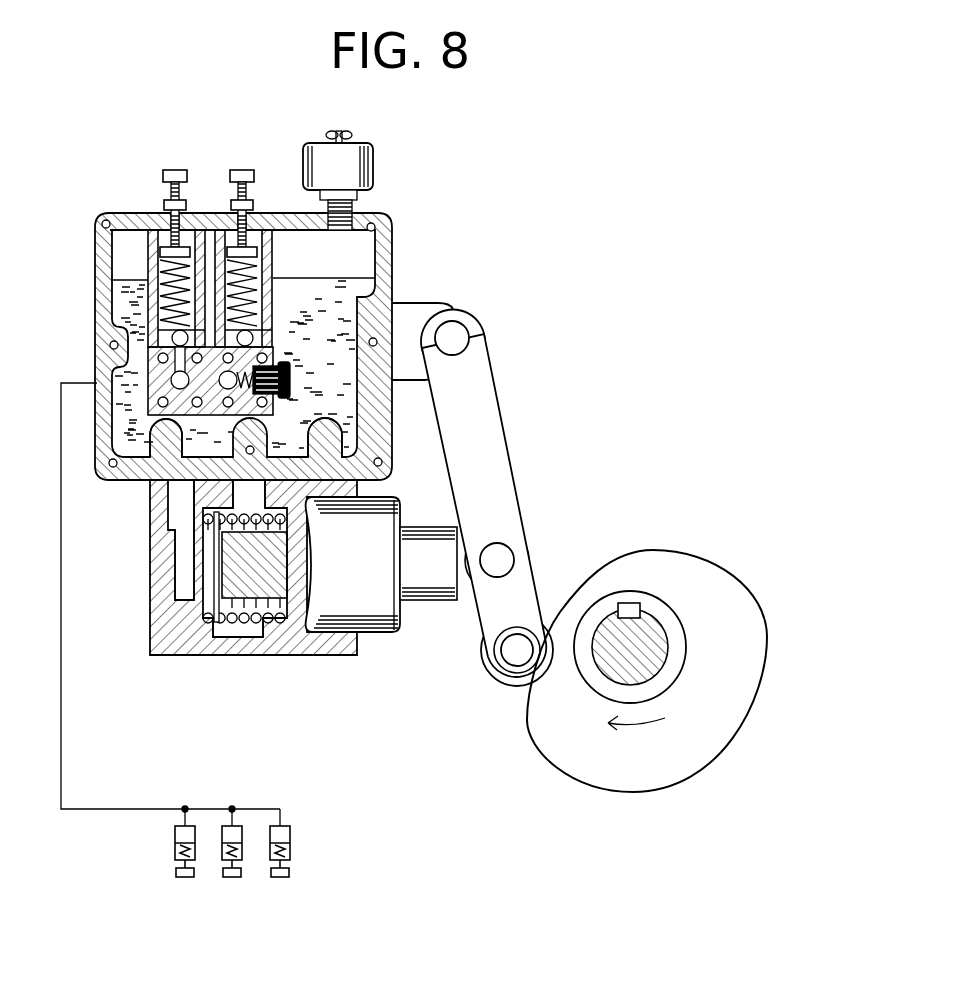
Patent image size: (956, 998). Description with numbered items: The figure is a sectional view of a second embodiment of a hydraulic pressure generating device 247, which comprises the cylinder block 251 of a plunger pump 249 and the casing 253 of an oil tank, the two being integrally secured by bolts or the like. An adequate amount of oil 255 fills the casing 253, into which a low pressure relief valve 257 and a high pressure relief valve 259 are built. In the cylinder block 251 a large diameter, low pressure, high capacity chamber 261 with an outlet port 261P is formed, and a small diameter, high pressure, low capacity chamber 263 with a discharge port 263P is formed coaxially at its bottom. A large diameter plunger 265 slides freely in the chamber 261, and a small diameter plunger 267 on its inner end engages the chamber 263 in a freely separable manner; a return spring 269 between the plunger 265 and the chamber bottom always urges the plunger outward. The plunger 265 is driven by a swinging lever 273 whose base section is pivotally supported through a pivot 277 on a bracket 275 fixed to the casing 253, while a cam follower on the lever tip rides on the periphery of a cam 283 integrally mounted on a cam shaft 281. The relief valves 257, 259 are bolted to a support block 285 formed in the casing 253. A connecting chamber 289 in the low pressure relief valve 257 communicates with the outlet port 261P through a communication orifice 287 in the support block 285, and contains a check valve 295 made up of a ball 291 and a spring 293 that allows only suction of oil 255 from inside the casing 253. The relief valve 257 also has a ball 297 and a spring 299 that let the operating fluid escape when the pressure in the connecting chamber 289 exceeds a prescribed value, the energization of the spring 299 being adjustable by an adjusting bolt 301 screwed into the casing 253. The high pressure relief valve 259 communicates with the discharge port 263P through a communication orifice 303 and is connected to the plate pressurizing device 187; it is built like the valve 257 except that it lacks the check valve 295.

The plate pressurizing device 187 is at (253, 799).
The pressure generating device 247 is at (411, 189).
The plunger pump 249 is at (164, 670).
The cylinder block 251 is at (152, 628).
The casing 253 is at (392, 240).
The oil 255 is at (350, 277).
The low pressure relief valve 257 is at (272, 265).
The high pressure relief valve 259 is at (145, 259).
The low pressure, high capacity chamber 261 is at (240, 632).
The outlet port 261P is at (263, 482).
The high pressure, low capacity chamber 263 is at (185, 590).
The discharge port 263P is at (172, 517).
The large diameter plunger 265 is at (375, 602).
The small diameter plunger 267 is at (264, 574).
The return spring 269 is at (219, 624).
The swinging lever 273 is at (493, 467).
The bracket 275 is at (430, 305).
The pivot 277 is at (456, 338).
The cam shaft 281 is at (642, 663).
The cam 283 is at (545, 739).
The support block 285 is at (157, 413).
The communication orifice 287 is at (283, 435).
The connecting chamber 289 is at (258, 416).
The ball 291 is at (158, 423).
The spring 293 is at (270, 380).
The check valve 295 is at (220, 415).
The ball 297 is at (152, 351).
The spring 299 is at (160, 300).
The adjusting bolt 301 is at (177, 168).
The communication orifice 303 is at (153, 468).